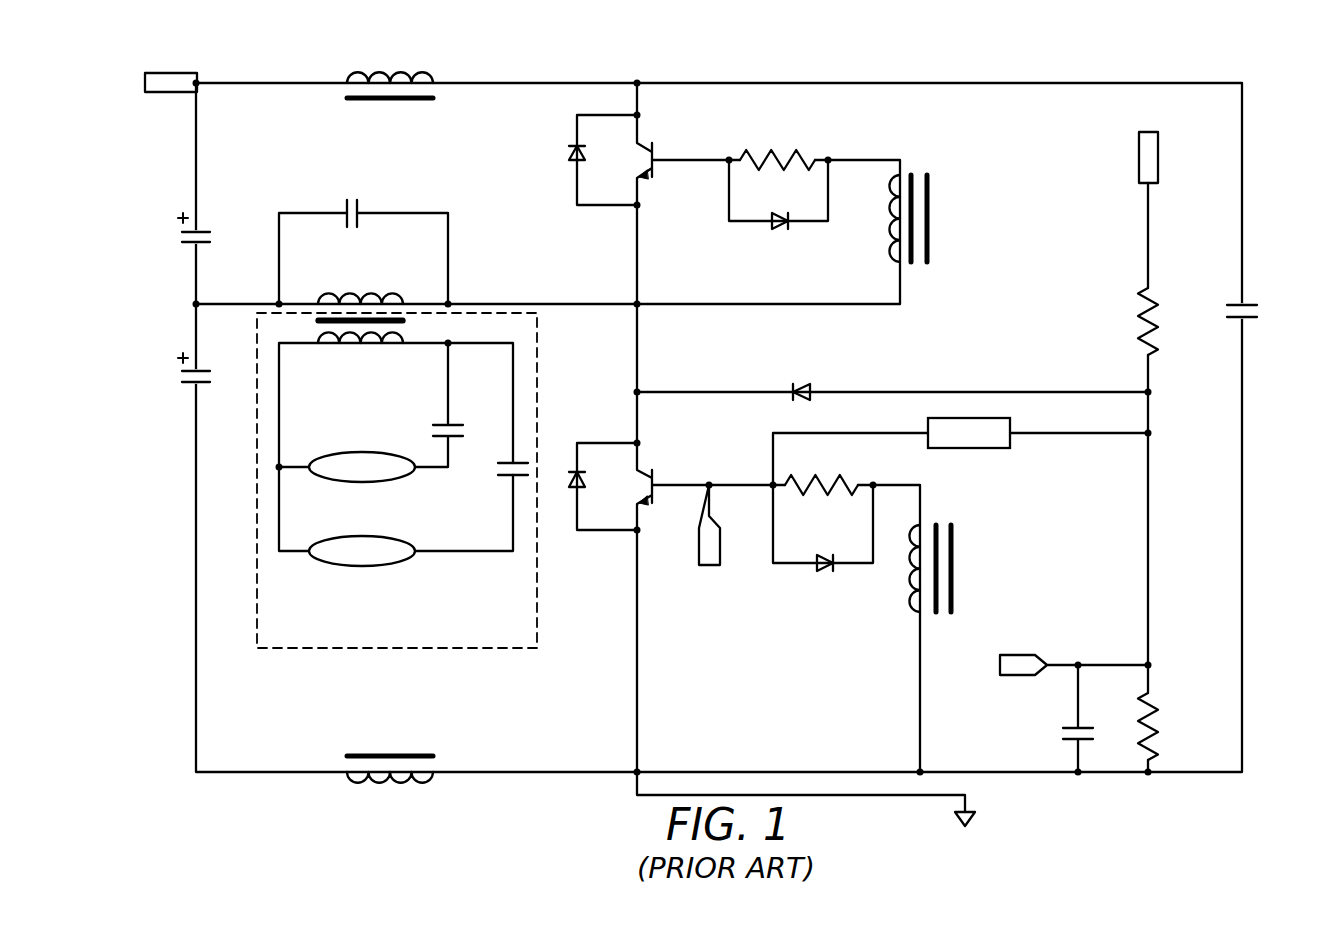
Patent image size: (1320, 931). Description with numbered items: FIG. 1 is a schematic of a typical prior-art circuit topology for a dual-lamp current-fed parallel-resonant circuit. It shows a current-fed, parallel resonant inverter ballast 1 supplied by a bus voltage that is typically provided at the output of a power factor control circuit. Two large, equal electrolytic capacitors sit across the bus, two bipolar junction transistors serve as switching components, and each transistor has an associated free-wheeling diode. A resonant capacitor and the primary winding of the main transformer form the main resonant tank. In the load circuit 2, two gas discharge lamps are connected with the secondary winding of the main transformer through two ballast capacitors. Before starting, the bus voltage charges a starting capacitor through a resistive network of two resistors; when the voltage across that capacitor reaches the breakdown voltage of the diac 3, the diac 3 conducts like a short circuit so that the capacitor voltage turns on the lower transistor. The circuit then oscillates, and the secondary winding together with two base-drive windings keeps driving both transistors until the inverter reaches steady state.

The current-fed parallel resonant inverter ballast 1 is at (163, 299).
The load circuit 2 is at (257, 493).
The diac 3 is at (985, 435).